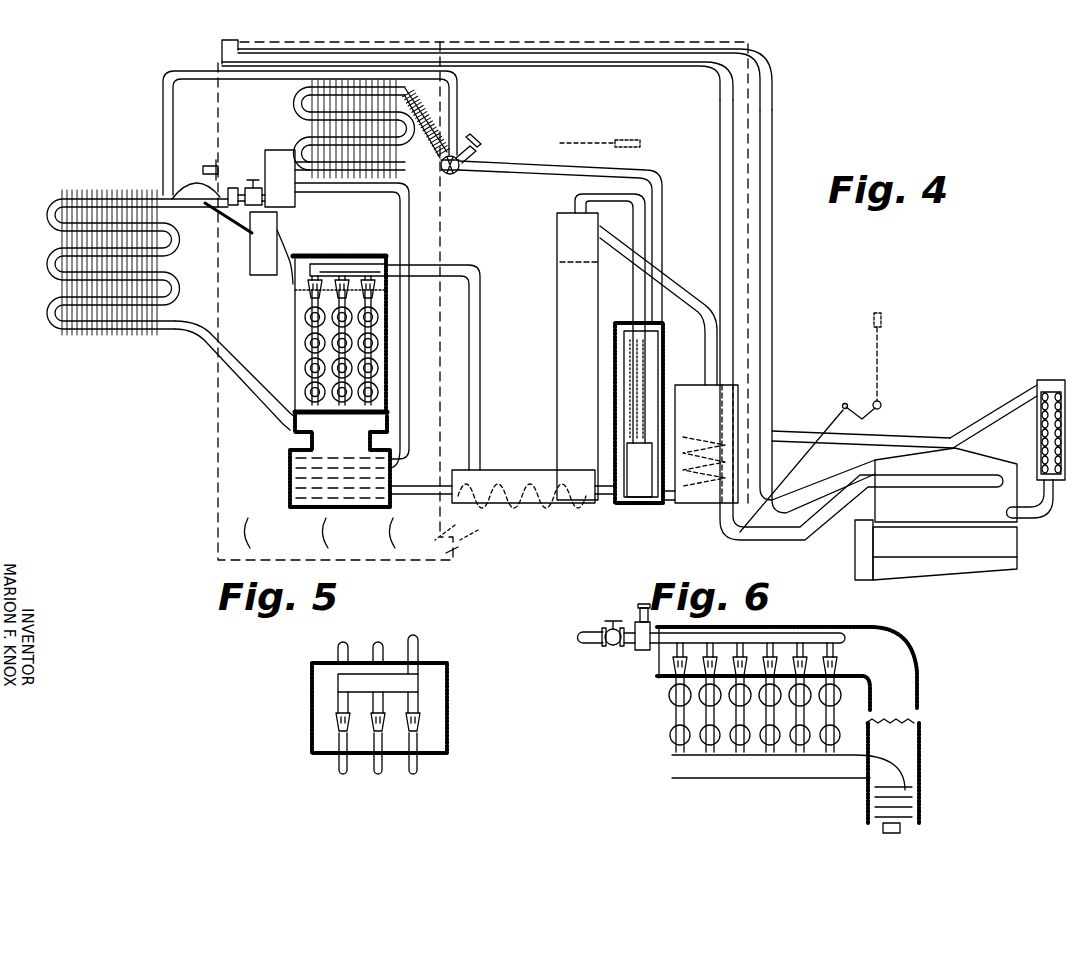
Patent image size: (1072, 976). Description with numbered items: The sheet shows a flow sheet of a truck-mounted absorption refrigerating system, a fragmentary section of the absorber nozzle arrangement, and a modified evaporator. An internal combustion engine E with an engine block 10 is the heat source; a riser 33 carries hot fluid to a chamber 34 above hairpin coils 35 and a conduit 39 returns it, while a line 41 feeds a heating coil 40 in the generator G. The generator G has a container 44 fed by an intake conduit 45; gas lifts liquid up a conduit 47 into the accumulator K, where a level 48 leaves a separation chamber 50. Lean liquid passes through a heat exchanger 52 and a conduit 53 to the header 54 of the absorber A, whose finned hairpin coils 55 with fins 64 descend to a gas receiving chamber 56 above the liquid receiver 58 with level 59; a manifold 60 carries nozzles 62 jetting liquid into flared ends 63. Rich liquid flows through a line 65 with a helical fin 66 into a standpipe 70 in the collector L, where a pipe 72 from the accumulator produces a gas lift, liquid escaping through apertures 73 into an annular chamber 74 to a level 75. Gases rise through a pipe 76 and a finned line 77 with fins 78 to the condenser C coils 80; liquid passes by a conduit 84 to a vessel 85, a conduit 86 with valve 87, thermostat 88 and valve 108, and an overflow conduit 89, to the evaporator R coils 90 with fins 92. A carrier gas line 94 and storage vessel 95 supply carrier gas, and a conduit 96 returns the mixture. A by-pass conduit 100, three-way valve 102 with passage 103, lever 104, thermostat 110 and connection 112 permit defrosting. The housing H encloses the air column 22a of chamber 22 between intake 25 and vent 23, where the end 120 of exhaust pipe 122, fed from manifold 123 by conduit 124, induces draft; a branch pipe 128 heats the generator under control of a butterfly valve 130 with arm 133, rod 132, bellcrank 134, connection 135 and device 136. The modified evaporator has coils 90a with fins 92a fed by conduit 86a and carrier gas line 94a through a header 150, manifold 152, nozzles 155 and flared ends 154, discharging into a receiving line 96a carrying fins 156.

In FIG. 4, the engine block 10 is at (878, 466).
In FIG. 4, the chamber 22 is at (690, 99).
In FIG. 4, the air column 22a is at (255, 470).
In FIG. 4, the air vent 23 is at (210, 66).
In FIG. 4, the air intake 25 is at (473, 536).
In FIG. 4, the riser 33 is at (1002, 410).
In FIG. 4, the chamber 34 is at (1049, 380).
In FIG. 4, the hairpin coils 35 is at (1044, 422).
In FIG. 4, the conduit 39 is at (1041, 518).
In FIG. 4, the heating coil 40 is at (708, 430).
In FIG. 4, the line 41 is at (914, 436).
In FIG. 4, the container 44 is at (740, 397).
In FIG. 4, the intake conduit 45 is at (668, 504).
In FIG. 4, the conduit 47 is at (668, 286).
In FIG. 4, the lean absorption liquid level 48 is at (563, 262).
In FIG. 4, the chamber 50 is at (570, 236).
In FIG. 4, the heat exchanger 52 is at (522, 466).
In FIG. 4, the conduit 53 is at (479, 328).
In FIG. 5, the conduit 53 is at (418, 644).
In FIG. 4, the header 54 is at (354, 254).
In FIG. 5, the header 54 is at (326, 662).
In FIG. 4, the hairpin coils 55 is at (310, 316).
In FIG. 5, the hairpin coils 55 is at (357, 638).
In FIG. 4, the gas receiving chamber 56 is at (290, 430).
In FIG. 4, the liquid receiver 58 is at (298, 506).
In FIG. 4, the operating liquid level 59 is at (355, 449).
In FIG. 4, the manifold 60 is at (366, 278).
In FIG. 5, the manifold 60 is at (392, 678).
In FIG. 4, the nozzles 62 is at (390, 276).
In FIG. 5, the nozzles 62 is at (420, 705).
In FIG. 4, the flared ends 63 is at (310, 288).
In FIG. 5, the flared ends 63 is at (424, 720).
In FIG. 4, the fins 64 is at (305, 343).
In FIG. 4, the line 65 is at (426, 503).
In FIG. 4, the helical fin 66 is at (546, 484).
In FIG. 4, the standpipe 70 is at (630, 422).
In FIG. 4, the gas and vapor conducting pipe 72 is at (575, 198).
In FIG. 4, the apertures 73 is at (630, 349).
In FIG. 4, the annular chamber 74 is at (630, 394).
In FIG. 4, the liquid level 75 is at (630, 366).
In FIG. 4, the pipe 76 is at (580, 172).
In FIG. 4, the line 77 is at (446, 80).
In FIG. 4, the cooling fins 78 is at (428, 98).
In FIG. 4, the hairpin coils 80 is at (295, 90).
In FIG. 4, the conduit 84 is at (290, 135).
In FIG. 4, the liquid refrigerant accumulating vessel 85 is at (286, 202).
In FIG. 4, the conduit 86 is at (230, 210).
In FIG. 4, the valve 87 is at (245, 207).
In FIG. 6, the valve 87 is at (639, 652).
In FIG. 4, the thermostat 88 is at (211, 164).
In FIG. 6, the thermostat 88 is at (640, 608).
In FIG. 4, the conduit 89 is at (384, 202).
In FIG. 4, the coils 90 is at (104, 194).
In FIG. 4, the fins 92 is at (60, 190).
In FIG. 4, the carrier gas line 94 is at (225, 208).
In FIG. 4, the carrier gas storage vessel 95 is at (262, 270).
In FIG. 4, the conduit 96 is at (197, 360).
In FIG. 4, the by-pass conduit 100 is at (166, 140).
In FIG. 4, the three-way rotary valve 102 is at (452, 174).
In FIG. 4, the T-shaped passage 103 is at (477, 157).
In FIG. 4, the lever 104 is at (472, 139).
In FIG. 4, the valve 108 is at (255, 186).
In FIG. 6, the valve 108 is at (605, 644).
In FIG. 4, the thermostat 110 is at (632, 140).
In FIG. 4, the operating connection 112 is at (572, 142).
In FIG. 4, the exhaust pipe end 120 is at (214, 53).
In FIG. 4, the exhaust pipe 122 is at (554, 56).
In FIG. 4, the exhaust manifold 123 is at (941, 482).
In FIG. 4, the conduit 124 is at (820, 522).
In FIG. 4, the branch exhaust pipe 128 is at (725, 302).
In FIG. 4, the butterfly valve 130 is at (773, 518).
In FIG. 4, the rod or cable 132 is at (793, 468).
In FIG. 4, the arm 133 is at (736, 535).
In FIG. 4, the bellcrank 134 is at (868, 399).
In FIG. 4, the connection 135 is at (878, 362).
In FIG. 4, the thermostatically controlled device 136 is at (881, 314).
In FIG. 6, the header 150 is at (830, 627).
In FIG. 6, the manifold 152 is at (728, 630).
In FIG. 6, the flared ends 154 is at (838, 666).
In FIG. 6, the nozzles 155 is at (807, 626).
In FIG. 6, the fins 156 is at (921, 781).
In FIG. 6, the liquefied refrigerant conduit 86a is at (586, 639).
In FIG. 6, the hairpin coils 90a is at (671, 691).
In FIG. 6, the fins 92a is at (670, 729).
In FIG. 6, the carrier gas line 94a is at (919, 700).
In FIG. 6, the receiving line 96a is at (815, 766).
In FIG. 4, the absorber A is at (296, 381).
In FIG. 4, the condenser C is at (296, 118).
In FIG. 4, the internal combustion engine E is at (936, 550).
In FIG. 4, the generator G is at (706, 444).
In FIG. 4, the housing H is at (211, 438).
In FIG. 4, the liquid collector L is at (664, 368).
In FIG. 4, the evaporator R is at (42, 272).